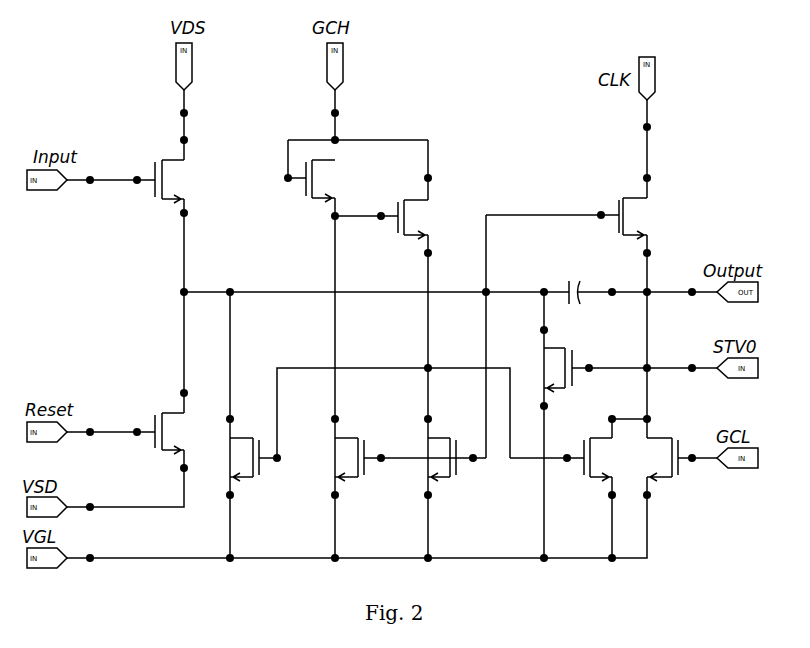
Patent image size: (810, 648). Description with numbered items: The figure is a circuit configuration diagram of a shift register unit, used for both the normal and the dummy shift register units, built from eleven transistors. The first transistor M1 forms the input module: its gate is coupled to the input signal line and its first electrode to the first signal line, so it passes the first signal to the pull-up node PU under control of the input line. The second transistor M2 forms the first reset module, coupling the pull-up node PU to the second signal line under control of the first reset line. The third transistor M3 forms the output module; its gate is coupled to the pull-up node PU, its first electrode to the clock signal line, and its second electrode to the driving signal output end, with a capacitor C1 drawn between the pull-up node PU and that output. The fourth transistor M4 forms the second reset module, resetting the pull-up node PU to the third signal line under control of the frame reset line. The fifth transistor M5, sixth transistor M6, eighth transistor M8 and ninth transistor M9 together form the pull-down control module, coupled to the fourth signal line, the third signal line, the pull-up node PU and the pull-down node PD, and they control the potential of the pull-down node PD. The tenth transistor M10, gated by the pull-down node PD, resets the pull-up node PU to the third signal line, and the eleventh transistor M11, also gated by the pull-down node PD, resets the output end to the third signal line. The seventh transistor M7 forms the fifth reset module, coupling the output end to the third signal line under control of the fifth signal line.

The first transistor M1 is at (125, 193).
The second transistor M2 is at (125, 446).
The third transistor M3 is at (566, 206).
The fourth transistor M4 is at (630, 367).
The fifth transistor M5 is at (394, 219).
The sixth transistor M6 is at (449, 471).
The seventh transistor M7 is at (682, 471).
The eighth transistor M8 is at (410, 471).
The ninth transistor M9 is at (311, 194).
The tenth transistor M10 is at (257, 471).
The eleventh transistor M11 is at (561, 471).
The capacitor C1 is at (562, 279).
The pull-up node PU is at (448, 280).
The pull-down node PD is at (393, 400).